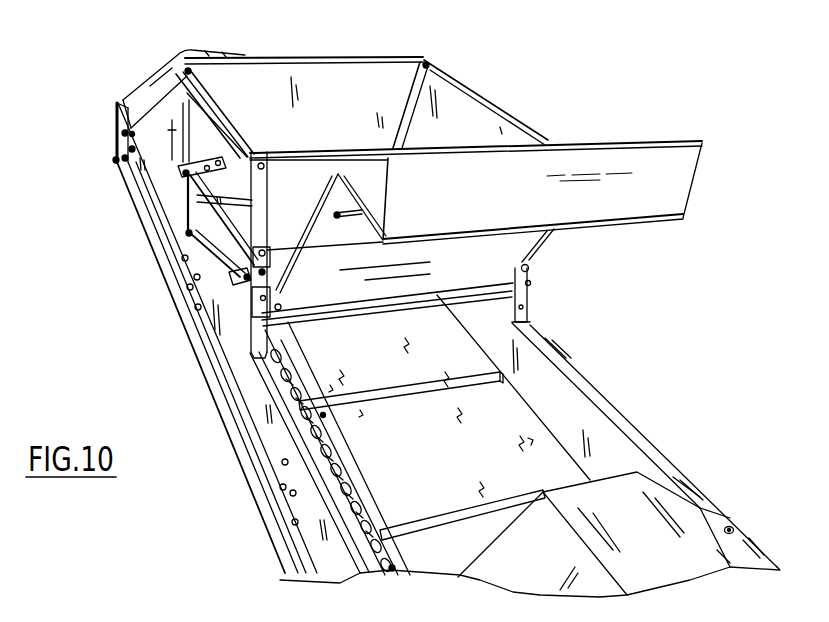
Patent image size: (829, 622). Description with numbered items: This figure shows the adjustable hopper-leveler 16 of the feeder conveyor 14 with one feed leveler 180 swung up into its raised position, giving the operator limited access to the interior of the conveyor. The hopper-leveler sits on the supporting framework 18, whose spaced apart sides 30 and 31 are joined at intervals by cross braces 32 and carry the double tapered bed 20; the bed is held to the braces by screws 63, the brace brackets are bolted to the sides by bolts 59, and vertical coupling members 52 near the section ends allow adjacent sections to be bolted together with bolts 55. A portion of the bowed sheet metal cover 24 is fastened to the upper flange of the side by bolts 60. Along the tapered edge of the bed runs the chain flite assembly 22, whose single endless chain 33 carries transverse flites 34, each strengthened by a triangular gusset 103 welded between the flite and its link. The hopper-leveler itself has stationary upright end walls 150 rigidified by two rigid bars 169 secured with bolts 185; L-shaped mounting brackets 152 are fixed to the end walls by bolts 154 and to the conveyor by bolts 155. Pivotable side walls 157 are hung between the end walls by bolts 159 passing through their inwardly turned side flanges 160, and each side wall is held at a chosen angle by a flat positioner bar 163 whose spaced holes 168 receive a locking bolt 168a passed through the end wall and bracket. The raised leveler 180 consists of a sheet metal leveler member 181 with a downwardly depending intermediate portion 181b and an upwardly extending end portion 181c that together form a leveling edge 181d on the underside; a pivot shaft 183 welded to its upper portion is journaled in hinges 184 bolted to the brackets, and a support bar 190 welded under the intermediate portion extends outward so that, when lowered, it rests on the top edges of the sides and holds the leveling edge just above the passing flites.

The feeder conveyor 14 is at (322, 553).
The hopper-leveler 16 is at (541, 113).
The supporting framework 18 is at (230, 463).
The double tapered bed 20 is at (475, 490).
The chain flite assembly 22 is at (368, 497).
The cover 24 is at (220, 50).
The side 30 is at (252, 428).
The side 31 is at (602, 392).
The cross brace 32 is at (362, 464).
The chain 33 is at (345, 466).
The flite 34 is at (378, 306).
The coupling member 52 is at (116, 118).
The bolt 55 is at (122, 134).
The bolt 59 is at (187, 290).
The bolt 60 is at (734, 530).
The screw 63 is at (528, 445).
The gusset 103 is at (328, 416).
The end wall 150 is at (347, 59).
The mounting bracket 152 is at (260, 352).
The bolt 154 is at (266, 254).
The bolt 155 is at (187, 234).
The side wall 157 is at (484, 96).
The bolt 159 is at (192, 72).
The side flange 160 is at (408, 90).
The positioner bar 163 is at (182, 173).
The hole 168 is at (219, 171).
The bolt 168a is at (186, 175).
The rigid bar 169 is at (205, 207).
The feed leveler 180 is at (166, 94).
The leveler member 181 is at (698, 149).
The intermediate portion 181b is at (362, 192).
The end portion 181c is at (473, 193).
The leveling edge 181d is at (661, 219).
The pivot shaft 183 is at (436, 300).
The hinge 184 is at (272, 300).
The bolt 185 is at (281, 296).
The support bar 190 is at (342, 218).